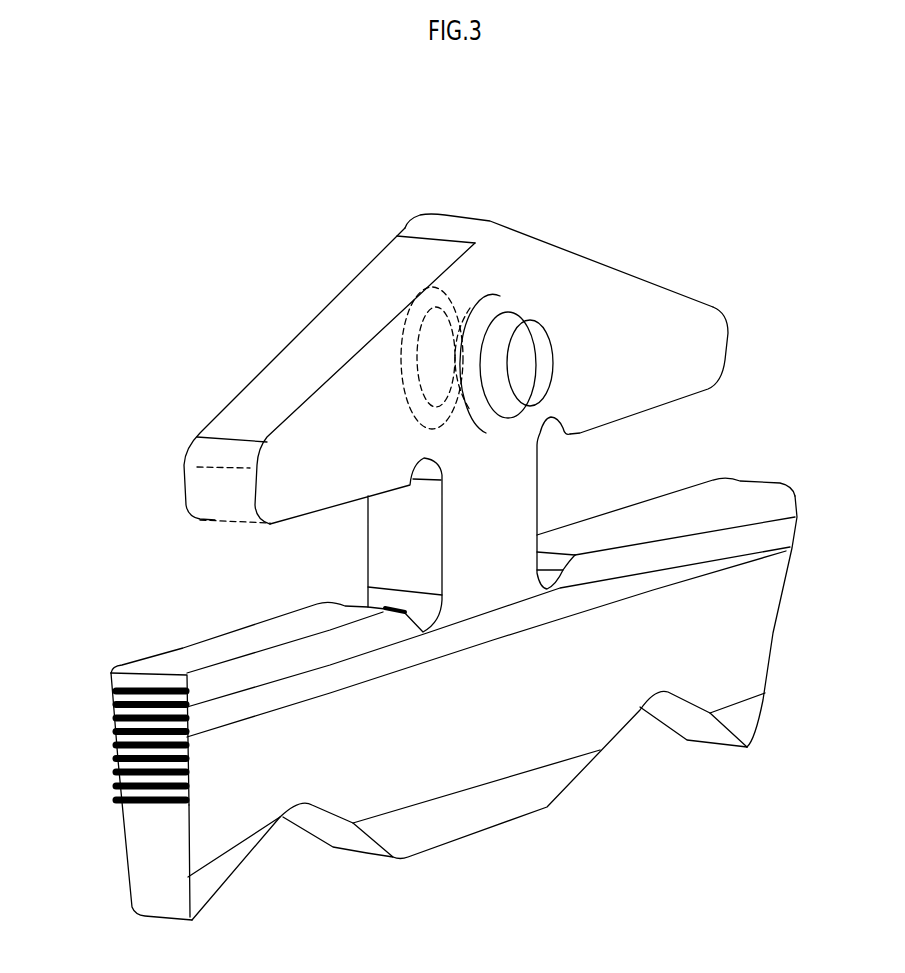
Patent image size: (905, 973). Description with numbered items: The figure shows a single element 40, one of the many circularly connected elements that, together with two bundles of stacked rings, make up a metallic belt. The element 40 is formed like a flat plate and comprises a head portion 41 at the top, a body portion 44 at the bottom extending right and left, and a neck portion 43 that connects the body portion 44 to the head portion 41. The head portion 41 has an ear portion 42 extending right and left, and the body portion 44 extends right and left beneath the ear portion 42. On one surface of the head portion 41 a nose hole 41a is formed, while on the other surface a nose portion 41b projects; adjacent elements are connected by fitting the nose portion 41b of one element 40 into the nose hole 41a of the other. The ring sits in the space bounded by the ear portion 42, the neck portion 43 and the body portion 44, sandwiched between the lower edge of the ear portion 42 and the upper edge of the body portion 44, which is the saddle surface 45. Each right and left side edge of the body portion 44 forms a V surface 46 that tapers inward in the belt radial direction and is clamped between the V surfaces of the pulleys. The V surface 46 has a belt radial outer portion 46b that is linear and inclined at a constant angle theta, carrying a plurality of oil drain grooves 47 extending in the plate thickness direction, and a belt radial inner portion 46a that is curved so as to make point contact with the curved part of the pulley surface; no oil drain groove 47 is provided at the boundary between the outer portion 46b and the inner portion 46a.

The element 40 is at (254, 258).
The head portion 41 is at (505, 257).
The nose hole 41a is at (412, 352).
The nose portion 41b is at (537, 363).
The ear portion 42 is at (677, 343).
The neck portion 43 is at (500, 545).
The body portion 44 is at (482, 737).
The saddle surface 45 is at (640, 520).
The V surface 46 is at (772, 665).
The belt radial inner portion 46a is at (157, 853).
The belt radial outer portion 46b is at (85, 672).
The oil drain groove 47 is at (140, 700).